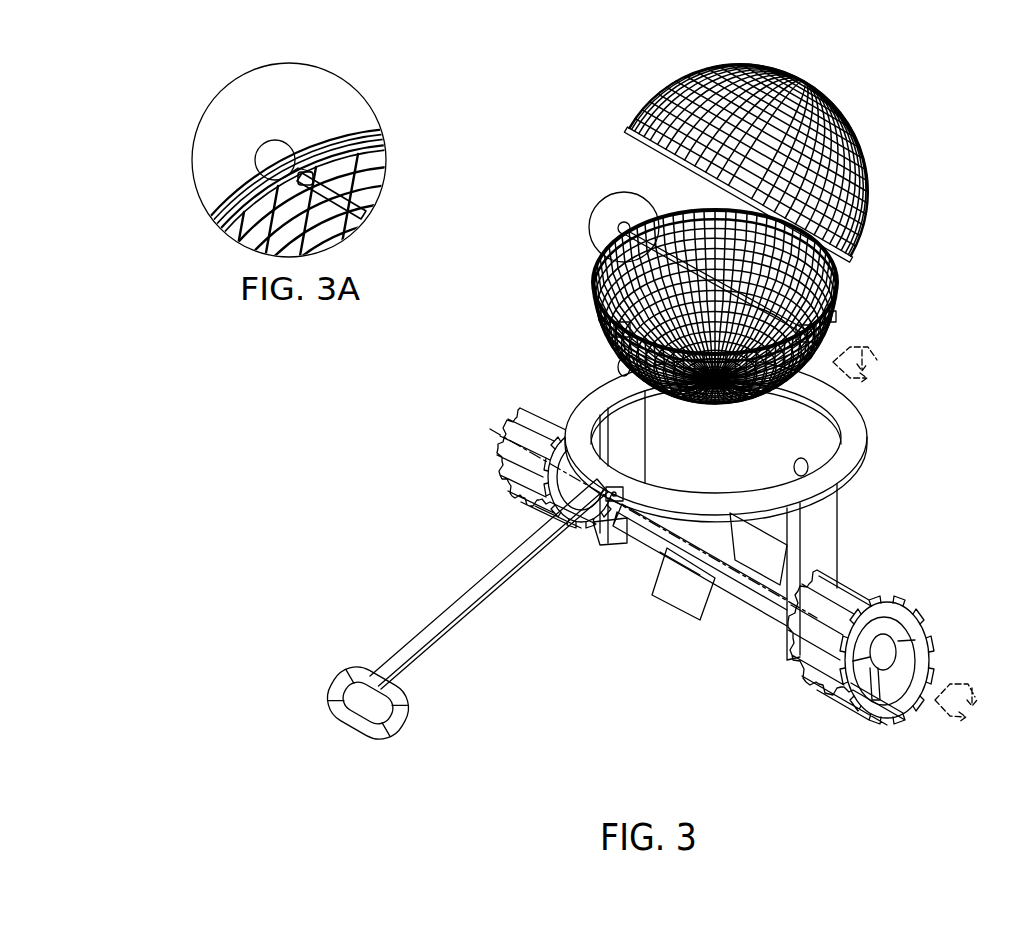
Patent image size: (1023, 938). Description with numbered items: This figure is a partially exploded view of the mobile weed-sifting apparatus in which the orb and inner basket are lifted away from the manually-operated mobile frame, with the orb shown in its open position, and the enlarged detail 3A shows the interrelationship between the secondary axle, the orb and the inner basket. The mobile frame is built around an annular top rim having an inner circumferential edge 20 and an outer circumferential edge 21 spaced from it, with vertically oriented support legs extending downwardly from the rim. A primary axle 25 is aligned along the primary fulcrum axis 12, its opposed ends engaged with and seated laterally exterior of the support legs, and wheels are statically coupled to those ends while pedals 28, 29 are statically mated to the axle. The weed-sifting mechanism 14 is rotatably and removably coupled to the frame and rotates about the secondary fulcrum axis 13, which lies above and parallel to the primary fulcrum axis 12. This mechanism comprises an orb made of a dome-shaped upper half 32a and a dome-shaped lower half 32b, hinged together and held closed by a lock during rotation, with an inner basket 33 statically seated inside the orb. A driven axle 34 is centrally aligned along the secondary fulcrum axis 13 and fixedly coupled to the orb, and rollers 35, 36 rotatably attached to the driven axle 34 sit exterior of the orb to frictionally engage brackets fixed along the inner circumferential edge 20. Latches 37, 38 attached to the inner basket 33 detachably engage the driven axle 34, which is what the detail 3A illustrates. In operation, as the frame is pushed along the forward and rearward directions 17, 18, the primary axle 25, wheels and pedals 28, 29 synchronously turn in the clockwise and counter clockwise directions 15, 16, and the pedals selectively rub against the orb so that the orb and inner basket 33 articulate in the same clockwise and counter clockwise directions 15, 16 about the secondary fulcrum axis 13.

In FIG. 3, the primary fulcrum axis 12 is at (932, 688).
In FIG. 3, the secondary fulcrum axis 13 is at (584, 201).
In FIG. 3, the weed-sifting mechanism 14 is at (909, 260).
In FIG. 3, the clockwise direction 15 is at (872, 351).
In FIG. 3, the counter clockwise direction 16 is at (790, 411).
In FIG. 3, the forward direction 17 is at (947, 712).
In FIG. 3, the rearward direction 18 is at (621, 619).
In FIG. 3, the inner circumferential edge 20 is at (823, 397).
In FIG. 3, the outer circumferential edge 21 is at (862, 448).
In FIG. 3, the primary axle 25 is at (660, 532).
In FIG. 3, the pedal 28 is at (687, 600).
In FIG. 3, the pedal 29 is at (781, 556).
In FIG. 3, the dome-shaped upper half 32a is at (866, 158).
In FIG. 3, the dome-shaped lower half 32b is at (611, 331).
In FIG. 3A, the dome-shaped lower half 32b is at (247, 217).
In FIG. 3, the inner basket 33 is at (603, 283).
In FIG. 3A, the inner basket 33 is at (250, 233).
In FIG. 3, the driven axle 34 is at (838, 295).
In FIG. 3A, the driven axle 34 is at (357, 212).
In FIG. 3A, the roller 35 is at (277, 148).
In FIG. 3, the roller 36 is at (827, 335).
In FIG. 3A, the latch 37 is at (310, 178).
In FIG. 3, the latch 38 is at (830, 316).
In FIG. 3, the detail callout 3A is at (622, 193).